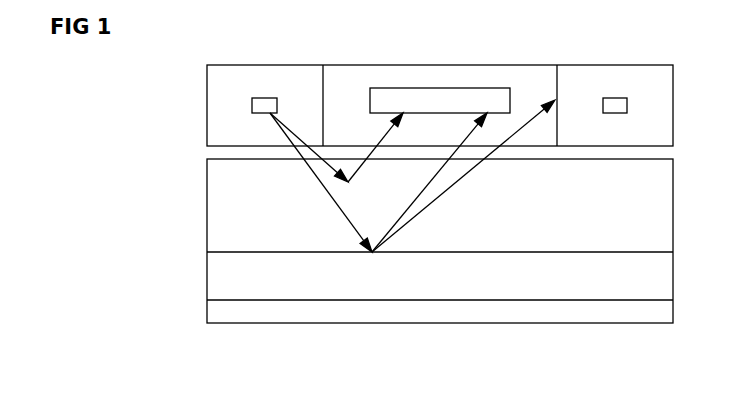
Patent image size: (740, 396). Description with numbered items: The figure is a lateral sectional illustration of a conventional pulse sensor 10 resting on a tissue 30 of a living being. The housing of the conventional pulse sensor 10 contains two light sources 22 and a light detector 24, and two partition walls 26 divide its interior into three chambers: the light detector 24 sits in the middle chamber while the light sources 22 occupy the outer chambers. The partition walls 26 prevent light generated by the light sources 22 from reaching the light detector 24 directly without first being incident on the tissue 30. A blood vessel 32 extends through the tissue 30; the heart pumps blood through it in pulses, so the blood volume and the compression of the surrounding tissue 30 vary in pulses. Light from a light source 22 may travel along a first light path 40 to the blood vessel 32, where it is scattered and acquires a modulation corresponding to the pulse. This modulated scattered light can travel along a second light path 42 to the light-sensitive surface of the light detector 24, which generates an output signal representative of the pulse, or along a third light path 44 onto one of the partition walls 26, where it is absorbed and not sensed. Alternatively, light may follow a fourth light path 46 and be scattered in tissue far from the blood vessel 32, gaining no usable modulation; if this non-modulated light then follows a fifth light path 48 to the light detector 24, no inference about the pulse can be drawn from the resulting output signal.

The conventional pulse sensor 10 is at (193, 102).
The light sources 22 is at (268, 97).
The light detector 24 is at (442, 87).
The partition walls 26 is at (327, 90).
The tissue 30 is at (193, 205).
The blood vessel 32 is at (258, 292).
The first light path 40 is at (318, 187).
The second light path 42 is at (405, 195).
The third light path 44 is at (462, 188).
The fourth light path 46 is at (323, 145).
The fifth light path 48 is at (375, 148).